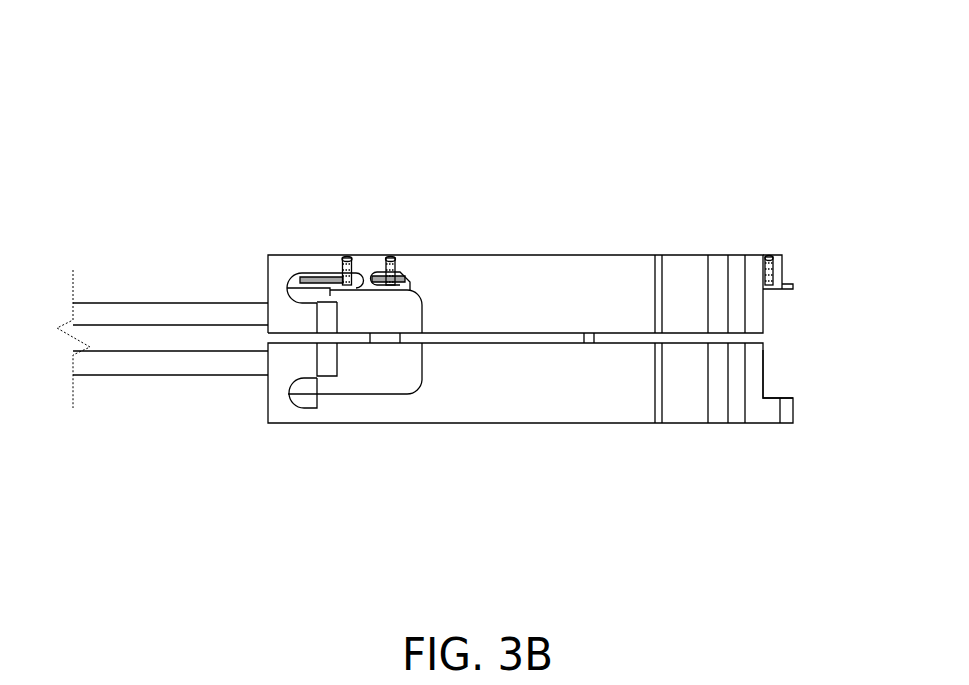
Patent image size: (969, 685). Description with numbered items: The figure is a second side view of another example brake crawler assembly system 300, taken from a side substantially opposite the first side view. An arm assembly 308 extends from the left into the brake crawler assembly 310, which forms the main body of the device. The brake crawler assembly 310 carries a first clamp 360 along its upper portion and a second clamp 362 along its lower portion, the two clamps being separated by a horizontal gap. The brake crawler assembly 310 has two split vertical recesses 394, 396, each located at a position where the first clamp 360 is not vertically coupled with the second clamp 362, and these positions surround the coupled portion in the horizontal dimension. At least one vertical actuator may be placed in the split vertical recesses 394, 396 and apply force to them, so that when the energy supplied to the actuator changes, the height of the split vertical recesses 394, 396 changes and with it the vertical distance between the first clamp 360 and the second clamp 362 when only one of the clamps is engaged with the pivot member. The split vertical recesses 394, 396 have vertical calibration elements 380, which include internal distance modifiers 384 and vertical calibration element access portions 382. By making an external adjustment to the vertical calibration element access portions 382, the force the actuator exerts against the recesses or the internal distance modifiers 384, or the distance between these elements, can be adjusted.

The brake crawler assembly system 300 is at (260, 97).
The assembly 308 is at (150, 303).
The brake crawler assembly 310 is at (485, 417).
The first clamp 360 is at (690, 320).
The second clamp 362 is at (685, 387).
The vertical calibration elements 380 is at (335, 275).
The vertical calibration element access portions 382 is at (349, 257).
The internal distance modifiers 384 is at (338, 277).
The split vertical recess 394 is at (815, 372).
The split vertical recess 396 is at (362, 375).